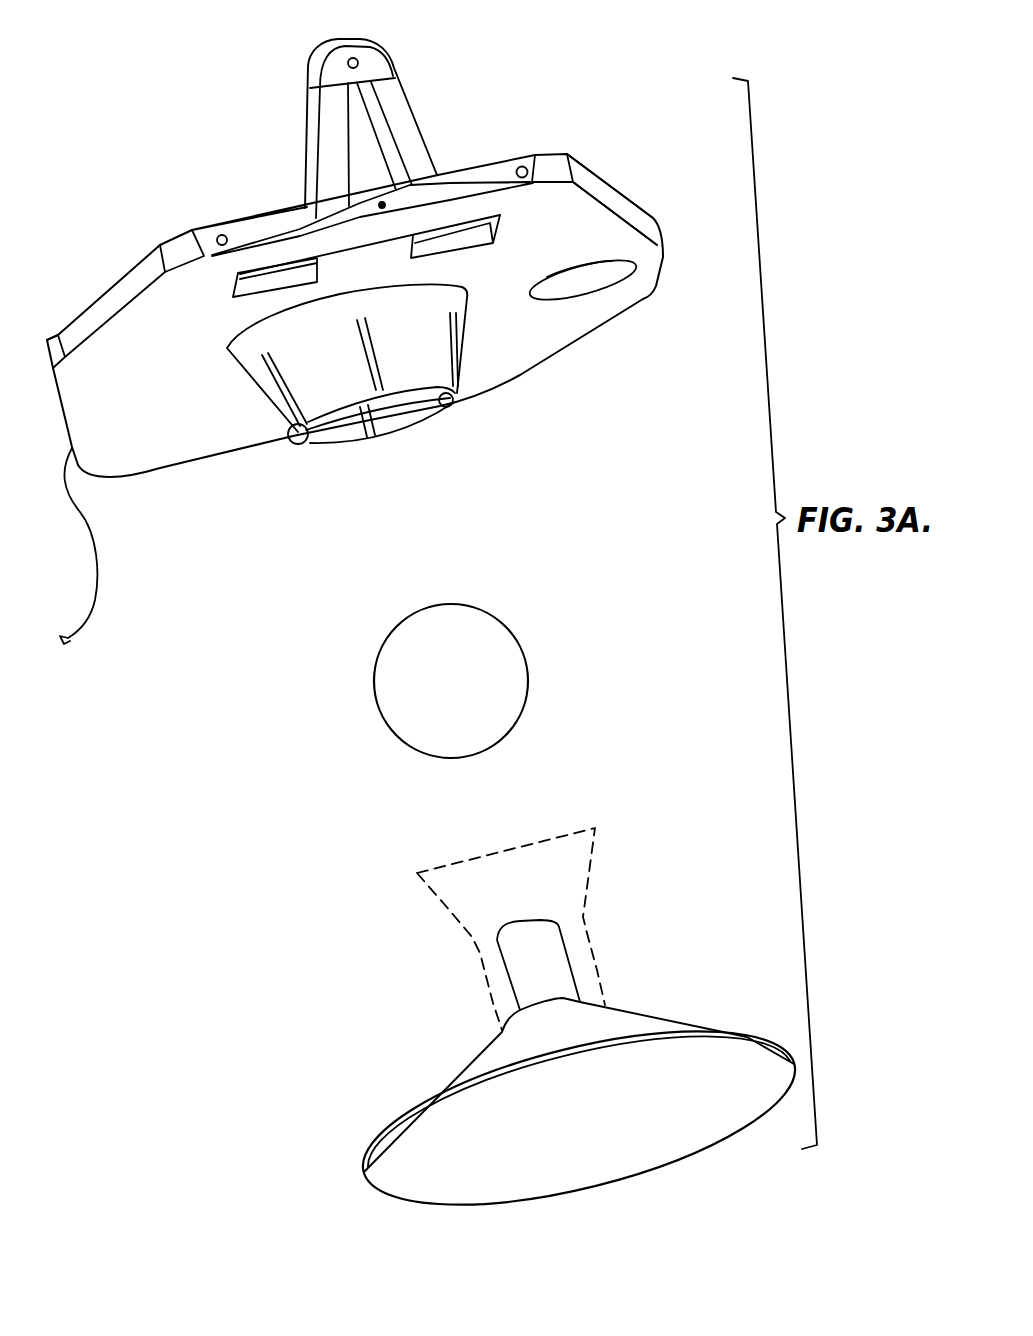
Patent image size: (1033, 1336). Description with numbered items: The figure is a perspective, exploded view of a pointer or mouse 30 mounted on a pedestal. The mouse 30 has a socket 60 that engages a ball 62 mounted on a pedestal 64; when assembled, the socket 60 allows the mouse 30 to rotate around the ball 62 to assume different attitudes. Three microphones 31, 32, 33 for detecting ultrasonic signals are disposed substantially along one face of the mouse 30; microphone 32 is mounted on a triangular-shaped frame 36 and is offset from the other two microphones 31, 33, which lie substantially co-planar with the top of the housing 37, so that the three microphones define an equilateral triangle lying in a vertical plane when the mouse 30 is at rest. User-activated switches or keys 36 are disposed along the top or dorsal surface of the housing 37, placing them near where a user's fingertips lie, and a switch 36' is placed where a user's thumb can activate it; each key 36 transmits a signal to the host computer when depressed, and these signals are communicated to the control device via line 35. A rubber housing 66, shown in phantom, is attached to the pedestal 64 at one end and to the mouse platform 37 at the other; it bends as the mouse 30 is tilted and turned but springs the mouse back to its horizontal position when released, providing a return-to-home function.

The pointer or mouse 30 is at (678, 212).
The microphone 31 is at (522, 166).
The microphone 32 is at (358, 60).
The microphone 33 is at (223, 234).
The line 35 is at (98, 540).
The keys 36 is at (350, 207).
The oval slot 36' is at (582, 296).
The housing 37 is at (598, 184).
The socket 60 is at (424, 374).
The ball 62 is at (455, 665).
The pedestal 64 is at (618, 1017).
The rubber housing 66 is at (596, 878).